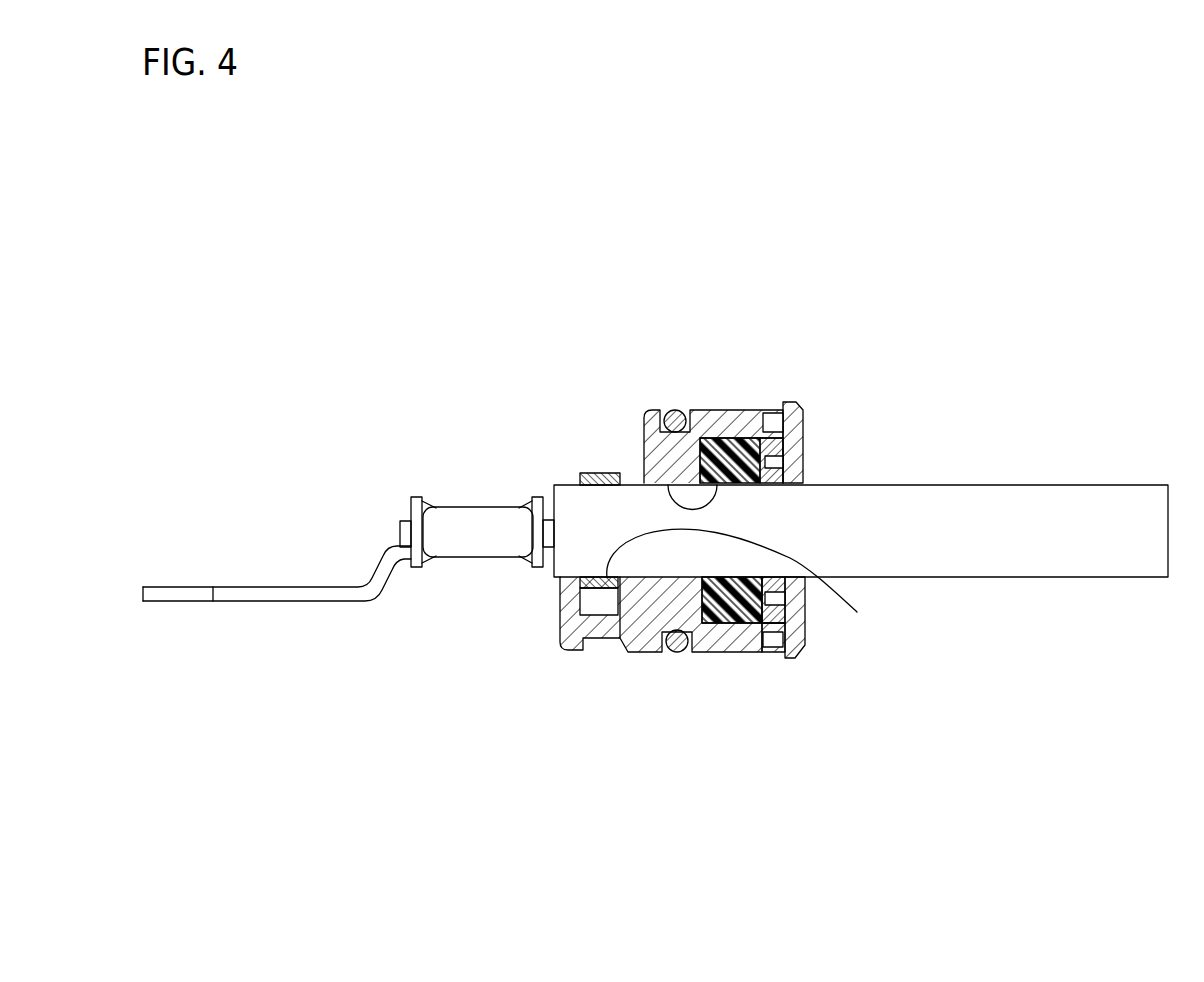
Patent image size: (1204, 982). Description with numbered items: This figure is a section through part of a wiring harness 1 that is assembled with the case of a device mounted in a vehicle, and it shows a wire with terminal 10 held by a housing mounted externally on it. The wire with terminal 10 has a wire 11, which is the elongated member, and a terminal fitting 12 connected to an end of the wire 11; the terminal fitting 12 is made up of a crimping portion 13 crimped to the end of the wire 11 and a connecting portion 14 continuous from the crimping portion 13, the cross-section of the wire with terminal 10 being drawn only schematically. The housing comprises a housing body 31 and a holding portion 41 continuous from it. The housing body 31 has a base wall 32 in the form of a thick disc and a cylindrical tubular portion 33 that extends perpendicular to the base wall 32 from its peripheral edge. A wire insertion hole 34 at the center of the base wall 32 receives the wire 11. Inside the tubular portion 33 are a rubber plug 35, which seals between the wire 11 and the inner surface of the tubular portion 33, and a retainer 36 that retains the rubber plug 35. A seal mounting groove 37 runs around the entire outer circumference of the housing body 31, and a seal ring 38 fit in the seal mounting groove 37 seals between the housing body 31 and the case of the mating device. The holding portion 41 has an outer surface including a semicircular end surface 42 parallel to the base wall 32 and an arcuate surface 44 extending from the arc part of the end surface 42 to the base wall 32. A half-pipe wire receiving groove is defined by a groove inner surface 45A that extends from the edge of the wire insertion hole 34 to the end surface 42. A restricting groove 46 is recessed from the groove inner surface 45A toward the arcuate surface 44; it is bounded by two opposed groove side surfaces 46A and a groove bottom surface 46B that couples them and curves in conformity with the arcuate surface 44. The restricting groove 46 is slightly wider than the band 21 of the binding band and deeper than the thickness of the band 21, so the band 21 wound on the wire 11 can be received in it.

The wiring harness 1 is at (763, 564).
The wire with terminal 10 is at (670, 513).
The wire 11 is at (1073, 578).
The terminal fitting 12 is at (348, 484).
The crimping portion 13 is at (456, 518).
The connecting portion 14 is at (298, 589).
The band 21 is at (603, 472).
The housing body 31 is at (718, 698).
The base wall 32 is at (676, 604).
The tubular portion 33 is at (740, 648).
The wire insertion hole 34 is at (713, 392).
The rubber plug 35 is at (750, 435).
The retainer 36 is at (806, 448).
The seal mounting groove 37 is at (678, 413).
The seal ring 38 is at (673, 410).
The holding portion 41 is at (661, 630).
The end surface 42 is at (555, 626).
The arcuate surface 44 is at (565, 661).
The groove inner surface 45A is at (568, 574).
The restricting groove 46 is at (679, 583).
The groove side surfaces 46A is at (611, 604).
The groove bottom surface 46B is at (597, 610).